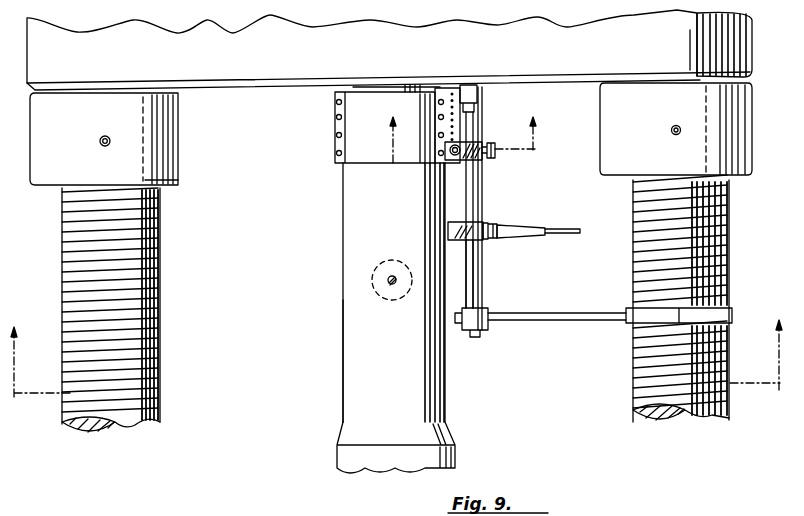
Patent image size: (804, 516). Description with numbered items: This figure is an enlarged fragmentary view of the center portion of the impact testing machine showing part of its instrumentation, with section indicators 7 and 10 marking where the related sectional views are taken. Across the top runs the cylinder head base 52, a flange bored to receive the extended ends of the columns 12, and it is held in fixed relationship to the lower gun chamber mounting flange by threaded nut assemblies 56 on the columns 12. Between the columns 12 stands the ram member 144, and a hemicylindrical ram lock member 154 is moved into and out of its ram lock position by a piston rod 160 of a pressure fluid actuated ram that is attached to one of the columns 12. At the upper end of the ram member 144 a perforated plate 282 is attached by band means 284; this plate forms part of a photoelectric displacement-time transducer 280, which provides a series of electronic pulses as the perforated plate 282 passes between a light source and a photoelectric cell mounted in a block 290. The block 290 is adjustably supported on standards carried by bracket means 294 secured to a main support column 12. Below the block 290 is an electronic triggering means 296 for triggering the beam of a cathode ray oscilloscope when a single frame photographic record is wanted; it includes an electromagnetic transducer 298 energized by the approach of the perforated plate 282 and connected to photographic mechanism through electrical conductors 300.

The cylinder head base 52 is at (115, 40).
The lower threaded nut assembly 56 is at (77, 163).
The column 12 is at (93, 434).
The ram member 144 is at (367, 338).
The hemicylindrical ram lock member 154 is at (360, 375).
The piston rod 160 is at (380, 271).
The band means 284 is at (353, 139).
The perforated plate 282 is at (449, 88).
The block 290 is at (470, 160).
The photoelectric displacement-time transducer 280 is at (508, 209).
The electronic triggering means 296 is at (478, 240).
The electromagnetic transducer 298 is at (457, 240).
The electrical conductors 300 is at (567, 233).
The bracket means 294 is at (619, 321).
The section line 10 is at (468, 140).
The section line 7 is at (396, 358).